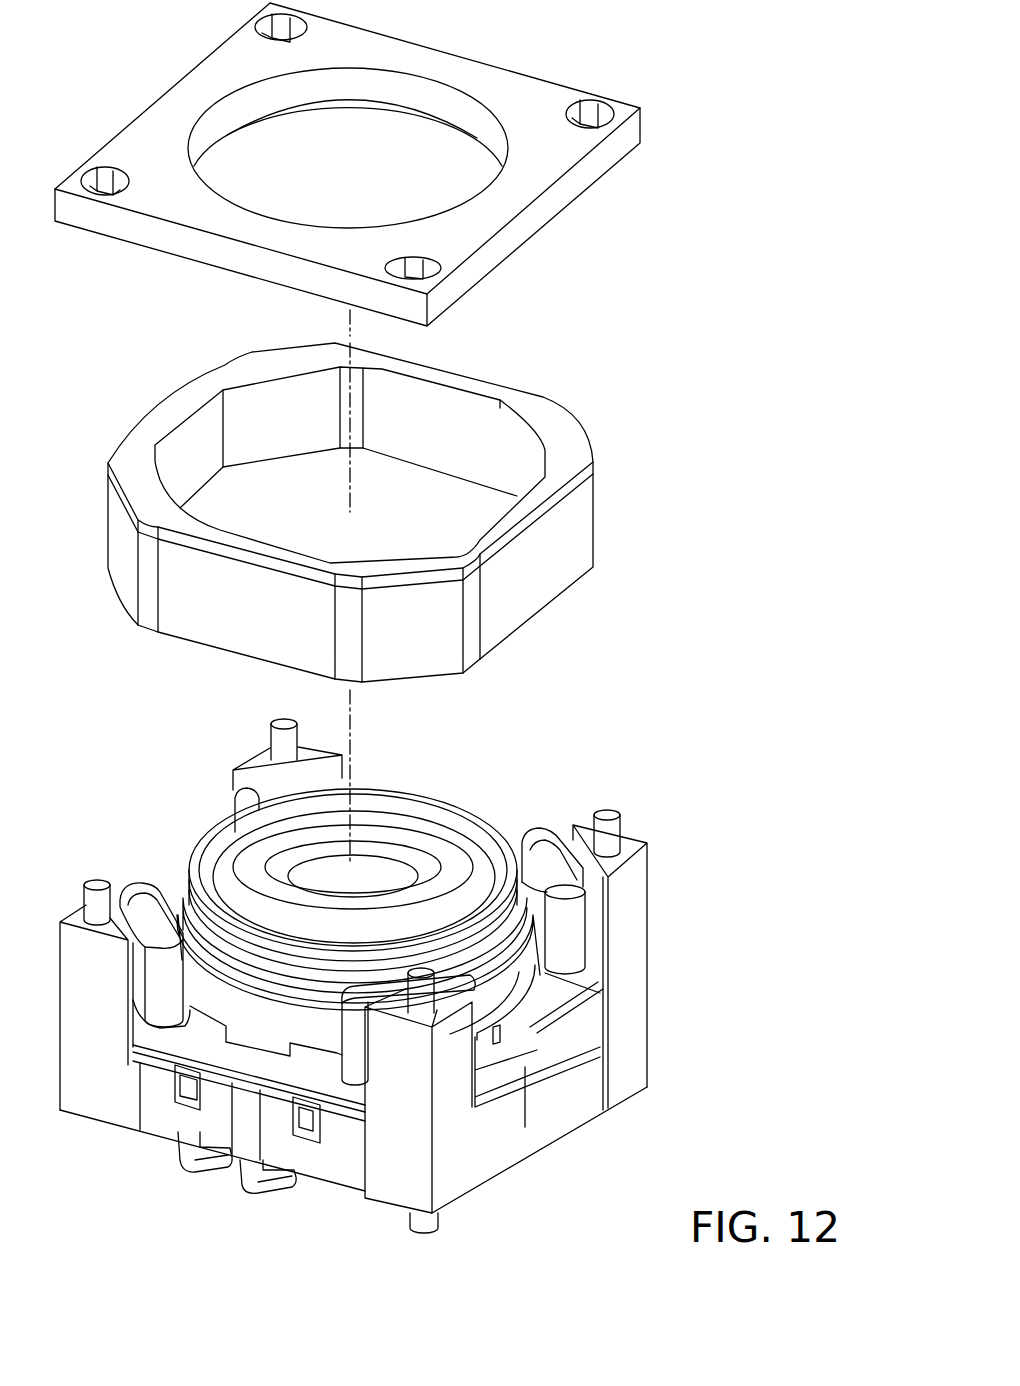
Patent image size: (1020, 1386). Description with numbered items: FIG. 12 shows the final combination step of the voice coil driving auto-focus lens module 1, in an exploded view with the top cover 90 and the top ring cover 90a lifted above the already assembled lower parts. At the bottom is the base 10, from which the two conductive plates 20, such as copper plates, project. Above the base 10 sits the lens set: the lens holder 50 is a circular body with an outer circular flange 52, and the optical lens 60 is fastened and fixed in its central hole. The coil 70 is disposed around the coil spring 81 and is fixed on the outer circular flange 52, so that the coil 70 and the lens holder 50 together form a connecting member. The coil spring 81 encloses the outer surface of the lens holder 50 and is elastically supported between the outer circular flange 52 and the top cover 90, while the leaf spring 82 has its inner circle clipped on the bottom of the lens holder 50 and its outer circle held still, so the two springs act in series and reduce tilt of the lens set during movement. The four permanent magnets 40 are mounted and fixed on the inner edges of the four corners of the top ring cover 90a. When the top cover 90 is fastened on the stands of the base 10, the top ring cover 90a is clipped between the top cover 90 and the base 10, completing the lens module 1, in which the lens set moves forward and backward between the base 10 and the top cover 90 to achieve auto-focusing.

The voice coil driving auto-focus lens module 1 is at (706, 66).
The base 10 is at (463, 1160).
The conductive plates 20 is at (183, 1117).
The permanent magnets 40 is at (253, 797).
The lens holder 50 is at (455, 801).
The outer circular flange 52 is at (517, 1025).
The optical lens 60 is at (388, 825).
The coil 70 is at (519, 983).
The coil spring 81 is at (183, 872).
The leaf spring 82 is at (593, 987).
The top cover 90 is at (518, 92).
The top ring cover 90a is at (540, 412).